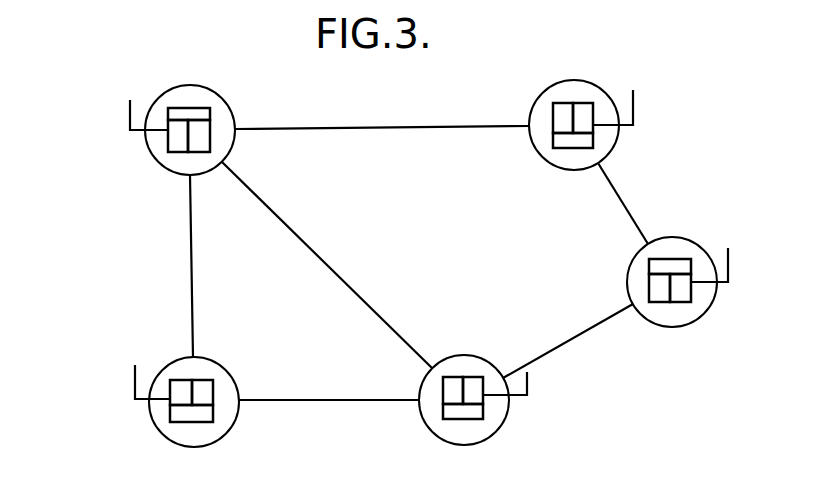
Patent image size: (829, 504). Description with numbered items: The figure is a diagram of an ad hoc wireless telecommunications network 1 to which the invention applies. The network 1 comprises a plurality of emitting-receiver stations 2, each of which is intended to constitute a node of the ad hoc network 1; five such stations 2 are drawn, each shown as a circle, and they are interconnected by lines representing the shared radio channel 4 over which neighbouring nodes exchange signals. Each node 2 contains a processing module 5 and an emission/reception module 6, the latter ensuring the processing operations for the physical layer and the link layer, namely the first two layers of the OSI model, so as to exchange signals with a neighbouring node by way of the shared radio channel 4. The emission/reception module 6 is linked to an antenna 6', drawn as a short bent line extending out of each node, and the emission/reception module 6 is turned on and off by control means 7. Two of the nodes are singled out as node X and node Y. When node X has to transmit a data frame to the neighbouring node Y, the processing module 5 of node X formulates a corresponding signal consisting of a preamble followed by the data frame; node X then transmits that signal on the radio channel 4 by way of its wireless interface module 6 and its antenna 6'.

The telecommunications network 1 is at (140, 282).
The emitting-receiver station 2 is at (425, 254).
The shared radio channel 4 is at (422, 128).
The processing module 5 is at (197, 142).
The emission/reception module 6 is at (432, 222).
The antenna 6' is at (427, 241).
The control means 7 is at (192, 112).
The node X is at (152, 153).
The node Y is at (425, 423).